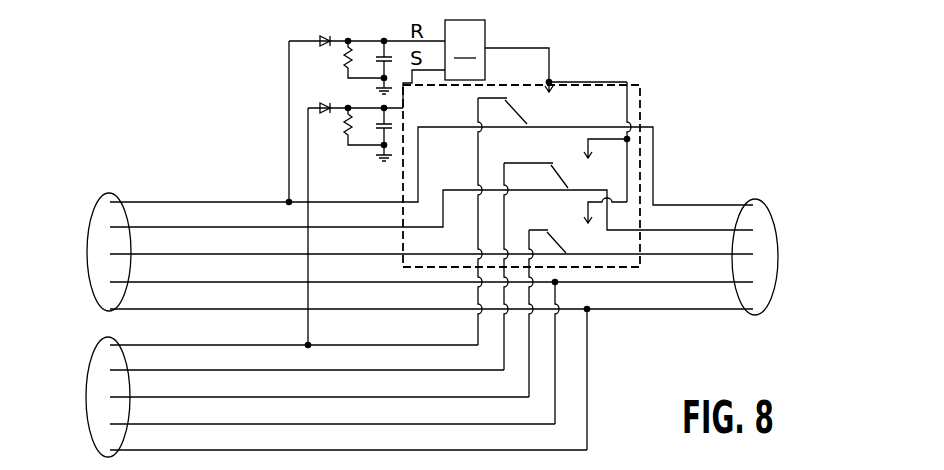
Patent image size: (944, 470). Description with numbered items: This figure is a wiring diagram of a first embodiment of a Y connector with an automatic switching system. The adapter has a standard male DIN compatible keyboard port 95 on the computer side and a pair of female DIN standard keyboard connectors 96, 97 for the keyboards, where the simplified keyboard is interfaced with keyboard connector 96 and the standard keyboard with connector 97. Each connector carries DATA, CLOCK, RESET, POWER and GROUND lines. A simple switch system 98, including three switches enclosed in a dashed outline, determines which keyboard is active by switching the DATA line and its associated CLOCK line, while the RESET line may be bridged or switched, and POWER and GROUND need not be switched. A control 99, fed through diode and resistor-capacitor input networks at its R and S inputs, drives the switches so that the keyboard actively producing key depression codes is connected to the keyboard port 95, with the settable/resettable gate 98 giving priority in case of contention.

The keyboard port 95 is at (753, 315).
The keyboard connector 96 is at (87, 252).
The keyboard connector 97 is at (86, 397).
The switch system 98 is at (640, 103).
The control 99 is at (536, 56).